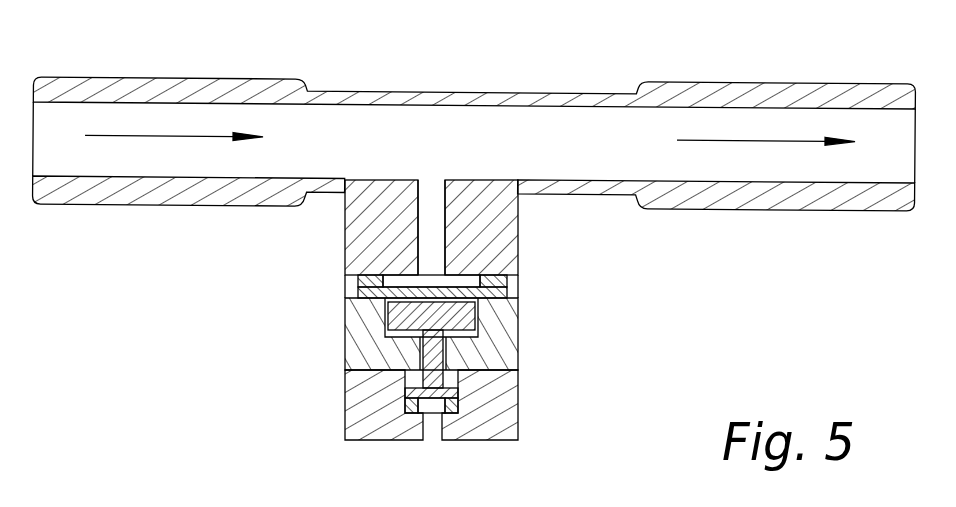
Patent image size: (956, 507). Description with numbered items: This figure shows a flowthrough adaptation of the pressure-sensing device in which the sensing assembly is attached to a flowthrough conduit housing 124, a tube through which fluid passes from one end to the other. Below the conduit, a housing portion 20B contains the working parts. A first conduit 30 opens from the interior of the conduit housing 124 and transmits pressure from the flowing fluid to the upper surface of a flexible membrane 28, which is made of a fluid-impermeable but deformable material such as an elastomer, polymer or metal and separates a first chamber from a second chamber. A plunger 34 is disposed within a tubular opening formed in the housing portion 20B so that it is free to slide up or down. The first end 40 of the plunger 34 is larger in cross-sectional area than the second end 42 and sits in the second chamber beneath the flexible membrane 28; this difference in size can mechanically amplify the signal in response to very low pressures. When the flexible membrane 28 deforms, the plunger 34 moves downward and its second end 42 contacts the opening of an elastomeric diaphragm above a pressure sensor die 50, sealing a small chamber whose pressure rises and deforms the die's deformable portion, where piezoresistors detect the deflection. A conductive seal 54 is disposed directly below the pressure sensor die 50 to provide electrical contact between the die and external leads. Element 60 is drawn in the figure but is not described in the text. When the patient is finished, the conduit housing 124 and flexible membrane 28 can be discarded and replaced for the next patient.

The flowthrough conduit housing 124 is at (350, 100).
The first conduit 30 is at (437, 212).
The housing portion 20B is at (353, 330).
The flexible membrane 28 is at (510, 279).
The first end of the plunger 40 is at (478, 322).
The second end of the plunger 42 is at (430, 372).
The plunger 34 is at (350, 380).
The seal 60 is at (458, 393).
The pressure sensor die 50 is at (447, 403).
The conductive seal 54 is at (447, 410).